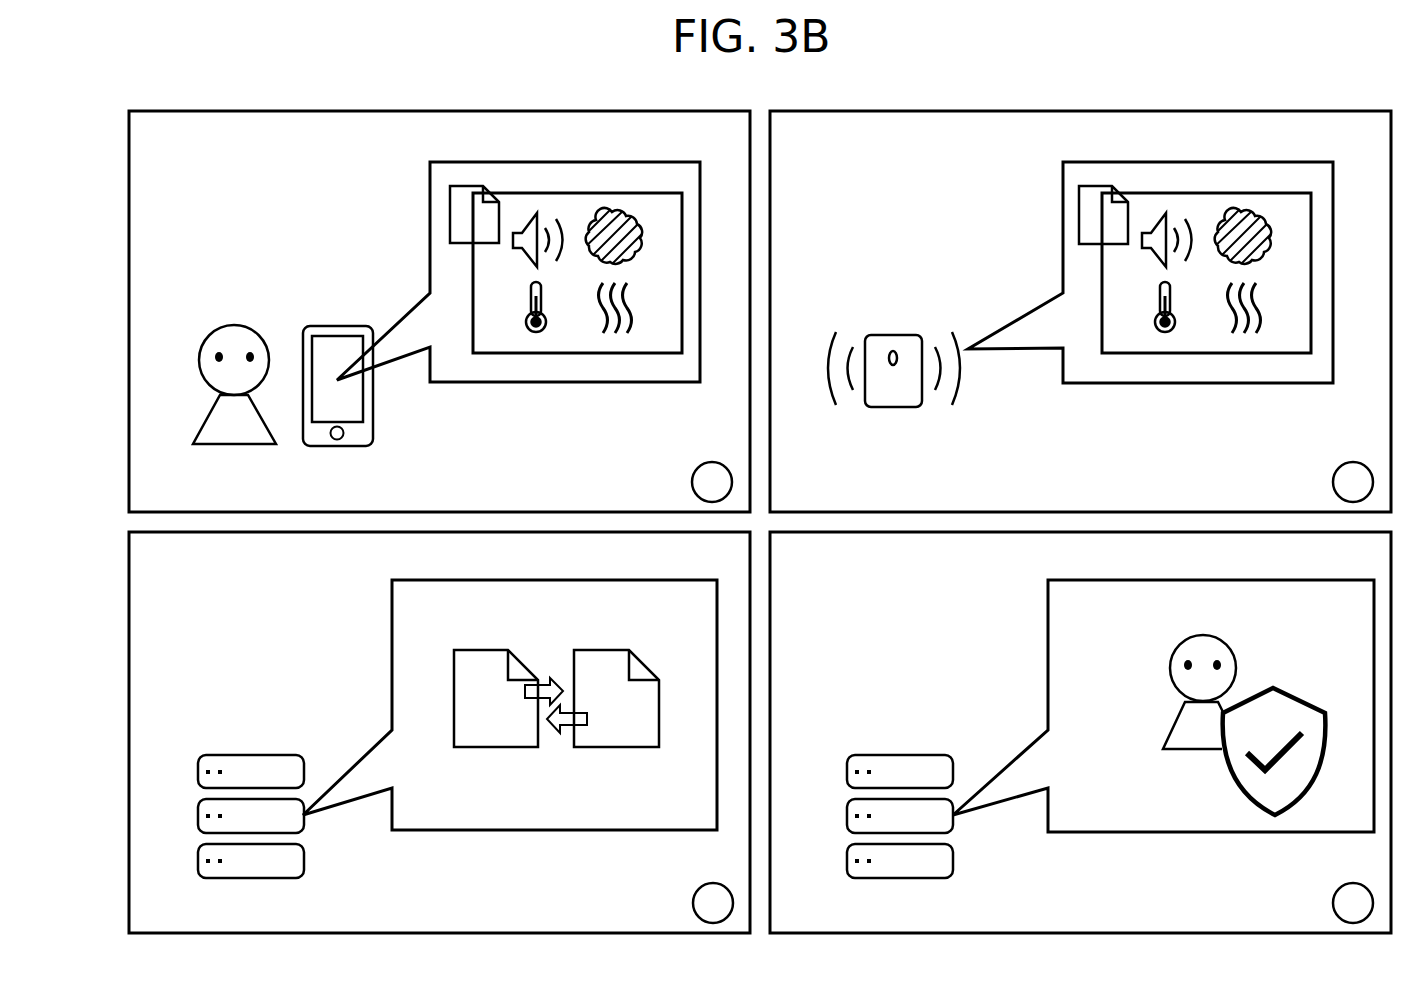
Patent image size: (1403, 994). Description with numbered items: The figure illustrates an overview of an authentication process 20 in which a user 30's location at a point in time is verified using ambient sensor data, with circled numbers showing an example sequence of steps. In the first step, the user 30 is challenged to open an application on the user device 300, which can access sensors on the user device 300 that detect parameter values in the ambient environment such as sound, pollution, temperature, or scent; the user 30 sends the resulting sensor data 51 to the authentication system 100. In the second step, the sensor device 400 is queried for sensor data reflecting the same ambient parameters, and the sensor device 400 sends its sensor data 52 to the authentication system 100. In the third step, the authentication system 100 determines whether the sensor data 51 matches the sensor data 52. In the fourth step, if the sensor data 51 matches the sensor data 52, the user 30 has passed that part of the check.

The authentication process 20 is at (172, 95).
The user 30 is at (215, 393).
The sensor data 51 is at (463, 237).
The sensor data 52 is at (1092, 237).
The authentication system 100 is at (248, 755).
The user device 300 is at (340, 326).
The sensor device 400 is at (905, 335).